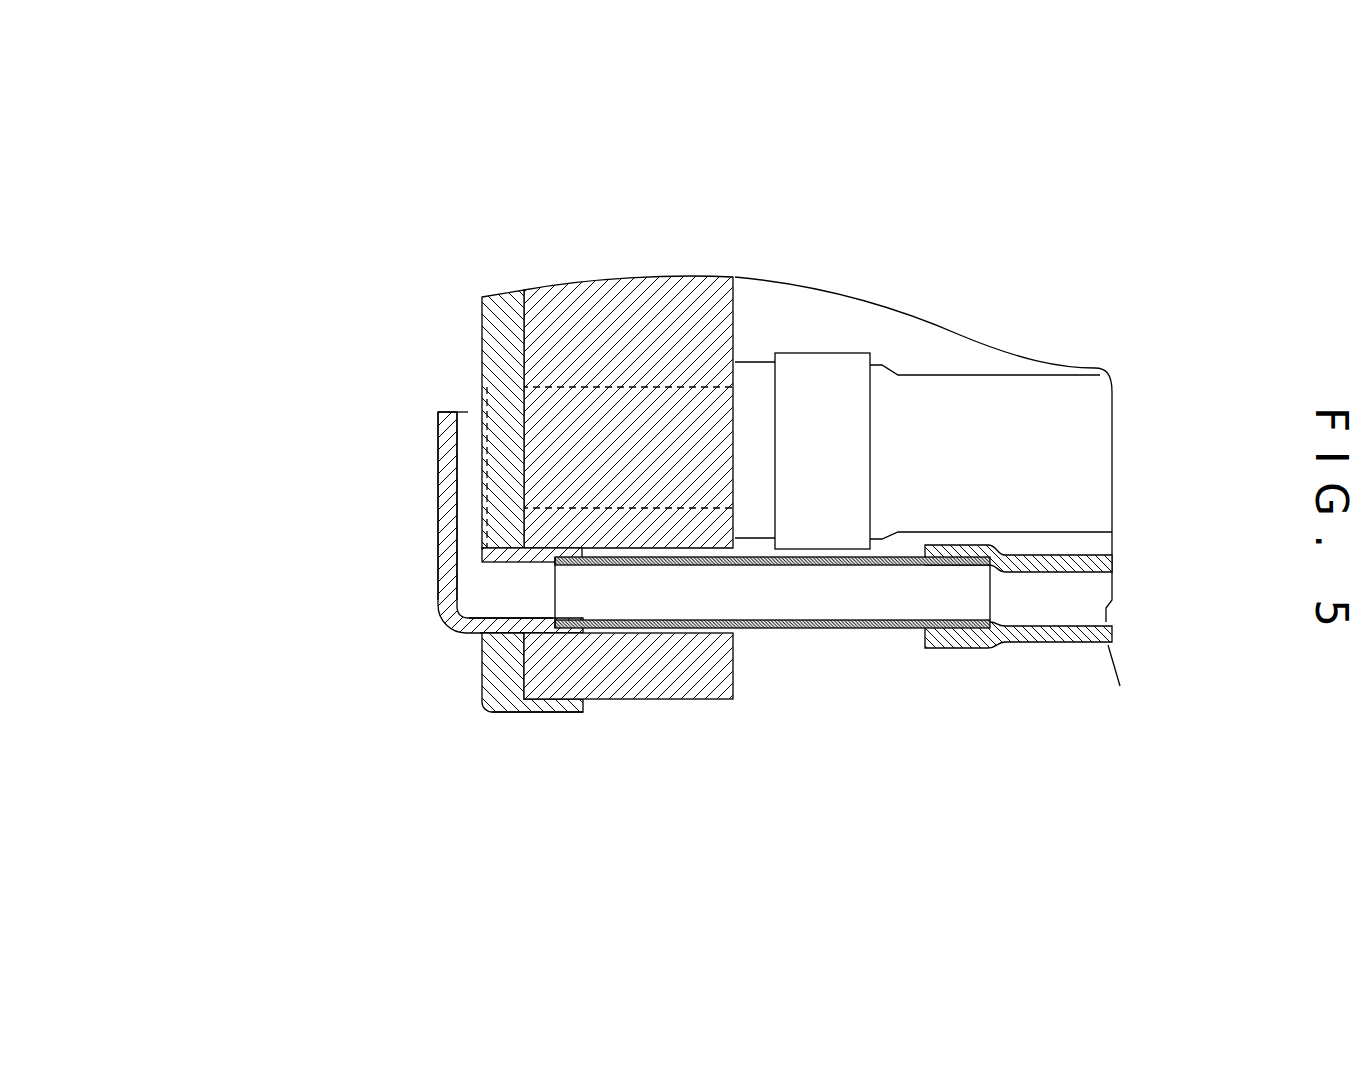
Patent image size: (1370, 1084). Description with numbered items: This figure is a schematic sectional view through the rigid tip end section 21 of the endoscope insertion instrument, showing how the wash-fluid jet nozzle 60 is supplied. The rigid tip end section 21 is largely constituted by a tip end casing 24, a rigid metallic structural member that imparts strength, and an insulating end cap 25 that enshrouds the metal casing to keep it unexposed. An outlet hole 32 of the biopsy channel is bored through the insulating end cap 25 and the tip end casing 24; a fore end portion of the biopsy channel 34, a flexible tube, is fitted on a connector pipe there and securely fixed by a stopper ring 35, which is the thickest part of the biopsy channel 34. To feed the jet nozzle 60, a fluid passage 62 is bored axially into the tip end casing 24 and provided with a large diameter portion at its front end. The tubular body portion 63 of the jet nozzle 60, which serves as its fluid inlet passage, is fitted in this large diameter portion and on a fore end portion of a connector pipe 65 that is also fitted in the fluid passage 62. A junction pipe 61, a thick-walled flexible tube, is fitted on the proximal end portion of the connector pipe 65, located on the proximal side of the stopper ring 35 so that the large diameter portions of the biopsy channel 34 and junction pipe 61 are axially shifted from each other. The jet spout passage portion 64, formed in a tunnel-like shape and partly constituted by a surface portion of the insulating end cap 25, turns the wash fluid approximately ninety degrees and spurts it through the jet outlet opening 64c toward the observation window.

The rigid tip end section 21 is at (582, 718).
The tip end casing 24 is at (658, 680).
The insulating end cap 25 is at (502, 712).
The outlet hole of biopsy channel 32 is at (620, 398).
The biopsy channel 34 is at (1035, 425).
The stopper ring 35 is at (815, 382).
The jet nozzle 60 is at (433, 612).
The junction pipe 61 is at (1080, 642).
The fluid passage 62 is at (708, 621).
The tubular body portion 63 is at (500, 627).
The jet spout passage portion 64 is at (438, 502).
The jet outlet opening 64c is at (466, 419).
The connector pipe 65 is at (875, 632).